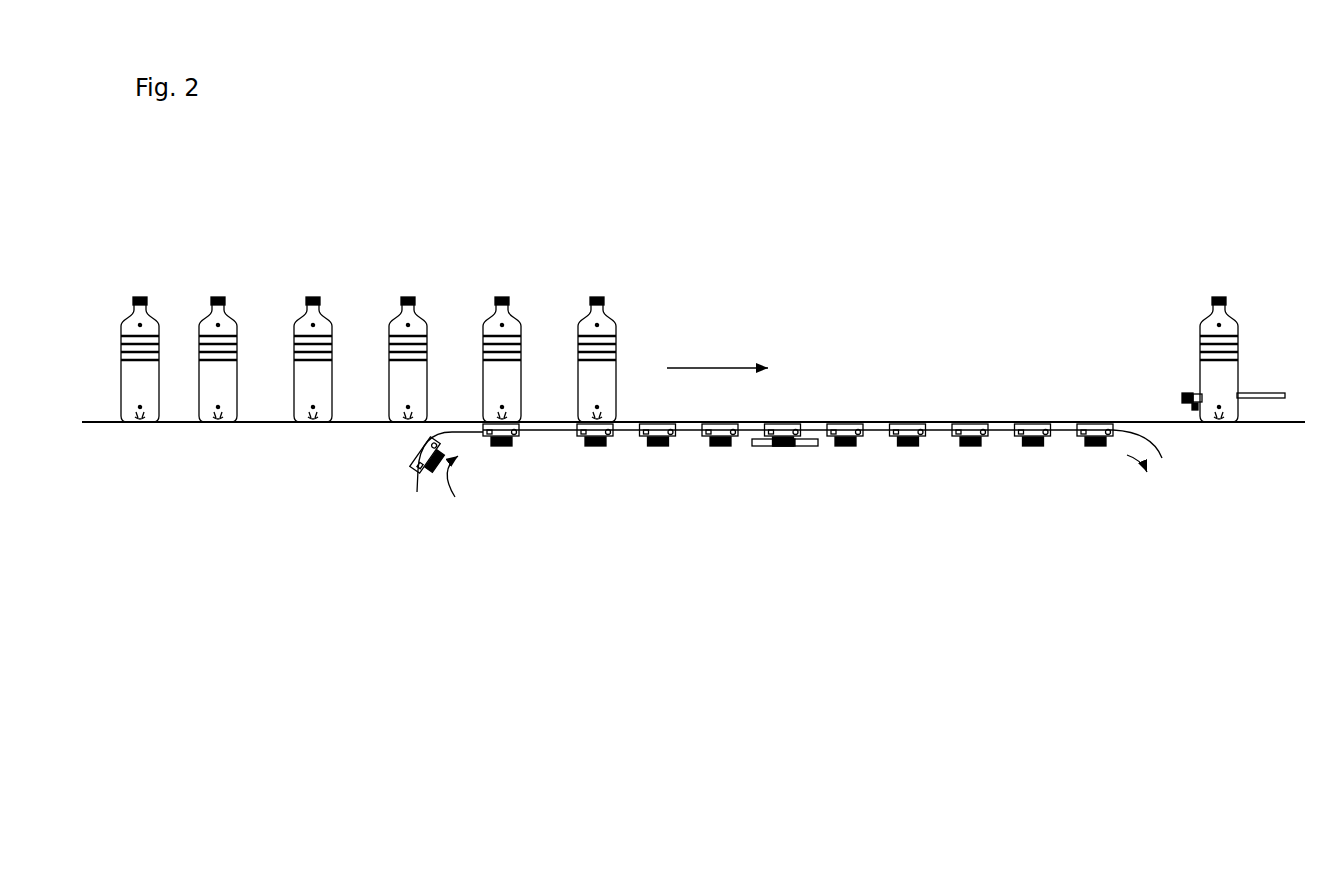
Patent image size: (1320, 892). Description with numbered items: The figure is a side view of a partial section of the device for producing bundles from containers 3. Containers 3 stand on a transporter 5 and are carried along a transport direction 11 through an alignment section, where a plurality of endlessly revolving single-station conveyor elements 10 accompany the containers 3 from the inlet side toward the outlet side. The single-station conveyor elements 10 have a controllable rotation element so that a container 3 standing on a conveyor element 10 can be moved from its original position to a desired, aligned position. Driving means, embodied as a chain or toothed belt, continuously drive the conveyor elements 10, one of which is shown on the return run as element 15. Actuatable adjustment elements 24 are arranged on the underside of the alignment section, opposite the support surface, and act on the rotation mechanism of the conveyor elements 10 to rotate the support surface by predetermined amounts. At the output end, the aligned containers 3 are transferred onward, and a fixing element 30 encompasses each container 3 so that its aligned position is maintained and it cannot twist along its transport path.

The container 3 is at (143, 297).
The transporter 5 is at (338, 427).
The single-station conveyor element 10 is at (965, 445).
The transport direction 11 is at (717, 348).
The return carrier on curved track 15 is at (420, 492).
The adjustment element 24 is at (755, 448).
The fixing element 30 is at (1195, 406).